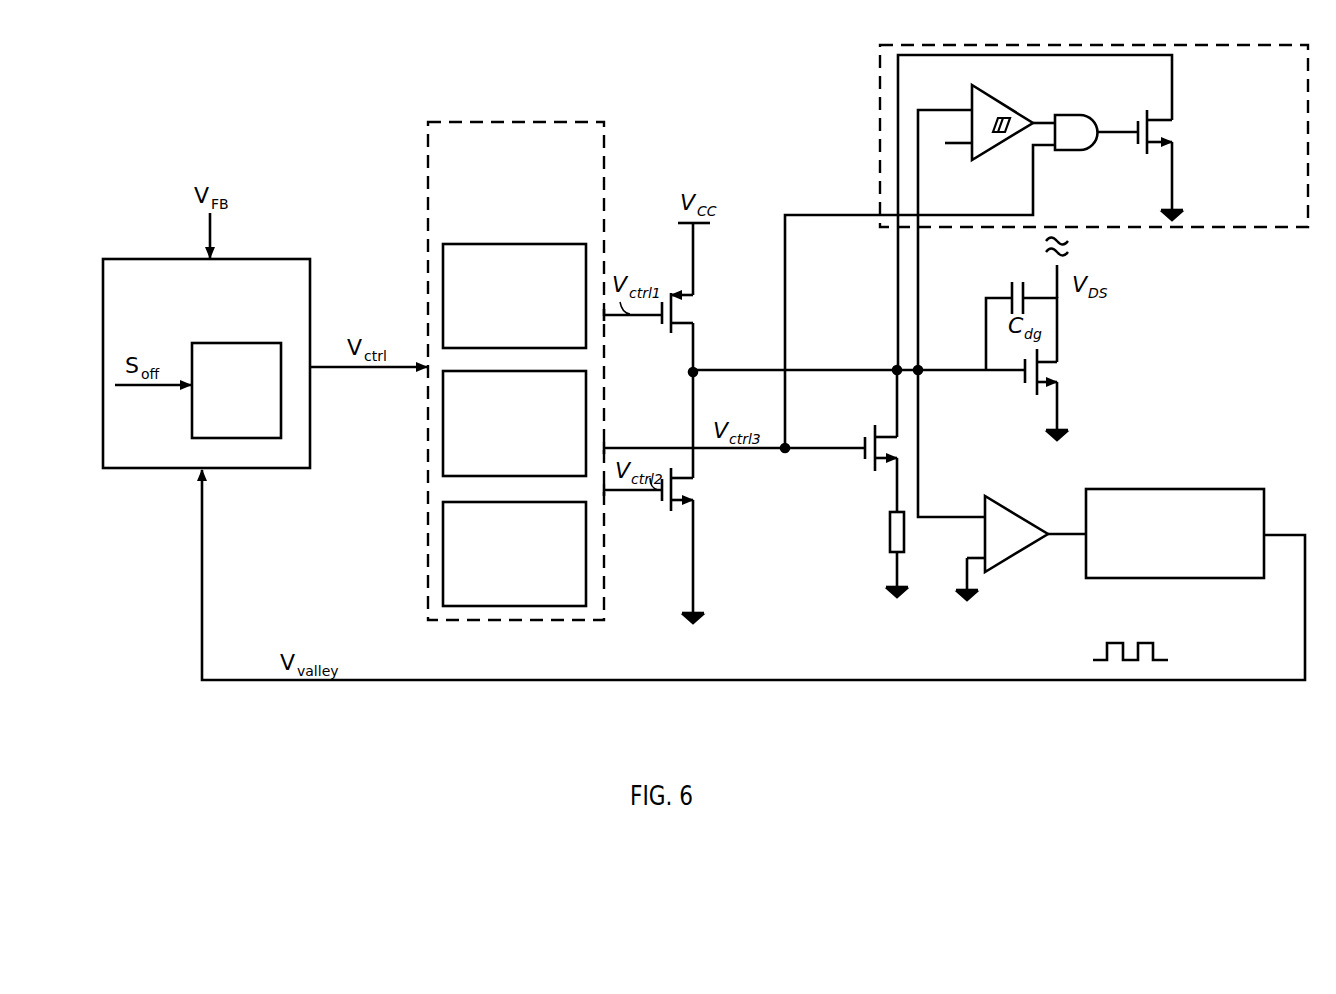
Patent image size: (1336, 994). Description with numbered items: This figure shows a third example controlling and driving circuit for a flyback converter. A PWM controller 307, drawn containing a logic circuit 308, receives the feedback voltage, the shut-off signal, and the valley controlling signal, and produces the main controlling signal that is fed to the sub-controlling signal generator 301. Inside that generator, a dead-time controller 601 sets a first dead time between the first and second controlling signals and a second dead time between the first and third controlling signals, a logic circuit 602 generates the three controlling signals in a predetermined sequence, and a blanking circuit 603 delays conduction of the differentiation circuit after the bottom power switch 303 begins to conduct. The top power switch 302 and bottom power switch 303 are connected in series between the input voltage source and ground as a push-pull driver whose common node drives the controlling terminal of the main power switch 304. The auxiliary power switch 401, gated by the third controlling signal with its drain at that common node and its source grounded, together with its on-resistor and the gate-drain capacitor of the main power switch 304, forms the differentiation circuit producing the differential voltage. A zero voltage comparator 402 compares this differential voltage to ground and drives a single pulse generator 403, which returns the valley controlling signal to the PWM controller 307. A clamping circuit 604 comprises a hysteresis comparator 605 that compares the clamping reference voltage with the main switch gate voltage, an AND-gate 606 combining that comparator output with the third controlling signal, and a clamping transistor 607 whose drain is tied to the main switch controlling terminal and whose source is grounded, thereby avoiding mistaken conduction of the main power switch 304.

The sub-controlling signal generator 301 is at (532, 212).
The top power switch 302 is at (671, 332).
The bottom power switch 303 is at (672, 497).
The main power switch 304 is at (1065, 394).
The PWM controller 307 is at (220, 321).
The logic circuit 308 is at (253, 431).
The auxiliary power switch 401 is at (865, 483).
The zero voltage comparator 402 is at (1017, 528).
The single pulse generator 403 is at (1247, 561).
The dead-time controller 601 is at (530, 339).
The logic circuit 602 is at (563, 449).
The blanking circuit 603 is at (567, 581).
The clamping circuit 604 is at (1265, 212).
The hysteresis comparator 605 is at (1000, 145).
The AND-gate 606 is at (1073, 150).
The clamping transistor 607 is at (1155, 151).